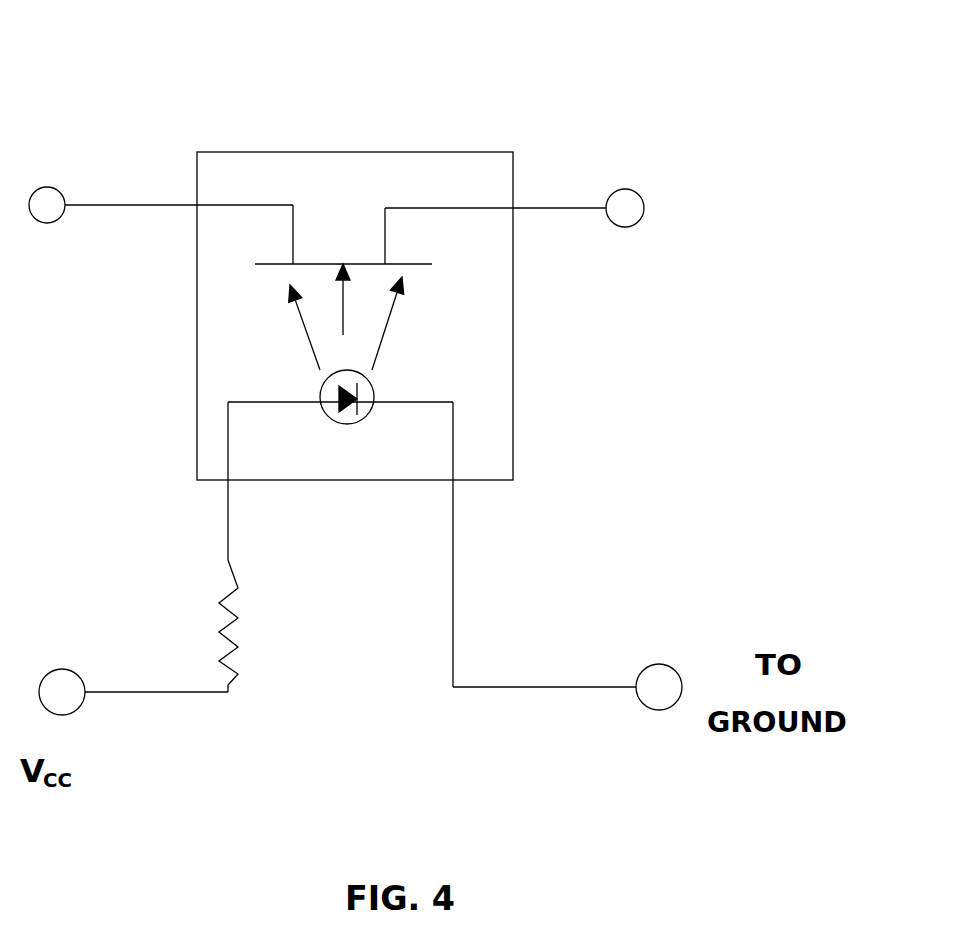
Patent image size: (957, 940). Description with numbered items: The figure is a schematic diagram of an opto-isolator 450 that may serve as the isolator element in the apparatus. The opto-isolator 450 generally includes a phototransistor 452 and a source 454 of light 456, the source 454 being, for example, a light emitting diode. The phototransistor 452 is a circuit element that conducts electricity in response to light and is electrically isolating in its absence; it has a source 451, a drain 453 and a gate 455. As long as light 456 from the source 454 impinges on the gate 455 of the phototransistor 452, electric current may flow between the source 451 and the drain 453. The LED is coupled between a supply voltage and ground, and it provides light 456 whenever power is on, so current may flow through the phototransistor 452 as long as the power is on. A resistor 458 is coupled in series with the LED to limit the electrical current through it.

The opto-isolator 450 is at (260, 152).
The source 451 is at (293, 238).
The phototransistor 452 is at (487, 287).
The drain 453 is at (385, 238).
The source of light 454 is at (375, 387).
The gate 455 is at (285, 265).
The light 456 is at (392, 308).
The resistor 458 is at (228, 628).